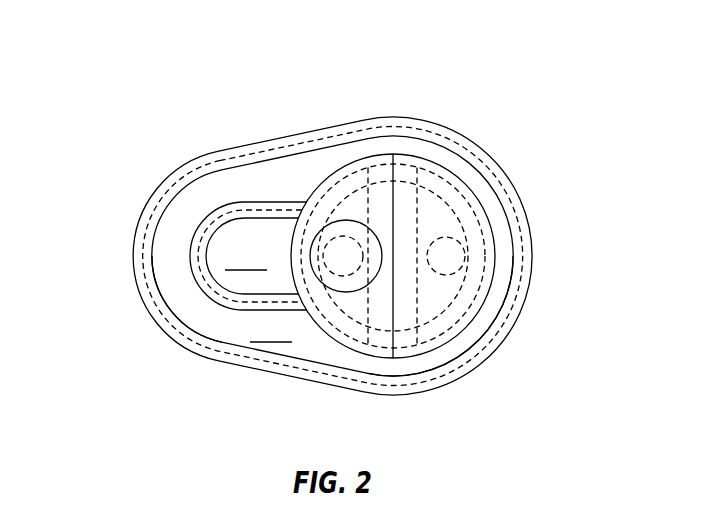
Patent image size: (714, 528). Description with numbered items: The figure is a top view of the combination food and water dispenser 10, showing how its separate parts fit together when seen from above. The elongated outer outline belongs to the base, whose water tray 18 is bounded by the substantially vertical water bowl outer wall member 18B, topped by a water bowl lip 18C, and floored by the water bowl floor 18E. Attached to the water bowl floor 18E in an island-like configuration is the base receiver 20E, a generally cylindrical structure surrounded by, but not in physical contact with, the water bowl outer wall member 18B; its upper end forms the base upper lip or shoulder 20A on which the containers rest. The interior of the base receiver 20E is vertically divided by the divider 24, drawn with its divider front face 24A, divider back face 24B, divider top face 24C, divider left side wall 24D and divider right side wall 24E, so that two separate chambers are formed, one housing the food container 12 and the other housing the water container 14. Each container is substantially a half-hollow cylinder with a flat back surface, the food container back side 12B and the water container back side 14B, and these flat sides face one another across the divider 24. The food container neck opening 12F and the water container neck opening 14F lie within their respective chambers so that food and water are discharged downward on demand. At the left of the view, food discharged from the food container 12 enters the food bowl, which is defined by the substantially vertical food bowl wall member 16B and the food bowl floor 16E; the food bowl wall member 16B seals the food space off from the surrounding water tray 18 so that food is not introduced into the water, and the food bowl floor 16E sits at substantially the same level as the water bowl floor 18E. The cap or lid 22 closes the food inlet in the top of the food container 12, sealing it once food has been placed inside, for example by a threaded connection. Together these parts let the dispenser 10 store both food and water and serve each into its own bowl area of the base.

The combination food and water dispenser 10 is at (130, 50).
The food container 12 is at (328, 335).
The food container back side 12B is at (393, 303).
The food container neck opening 12F is at (342, 252).
The water container 14 is at (443, 340).
The water container back side 14B is at (396, 197).
The water container neck opening 14F is at (445, 257).
The food bowl wall member 16B is at (246, 216).
The food bowl floor 16E is at (252, 256).
The water tray 18 is at (126, 254).
The water bowl outer wall member 18B is at (179, 191).
The water bowl lip 18C is at (202, 357).
The water bowl floor 18E is at (271, 328).
The base upper lip or shoulder 20A is at (437, 313).
The base receiver 20E is at (483, 230).
The cap or lid 22 is at (367, 225).
The divider 24 is at (410, 228).
The divider front face 24A is at (369, 312).
The divider back face 24B is at (418, 210).
The divider top face 24C is at (382, 195).
The divider left side wall 24D is at (420, 181).
The divider right side wall 24E is at (428, 343).